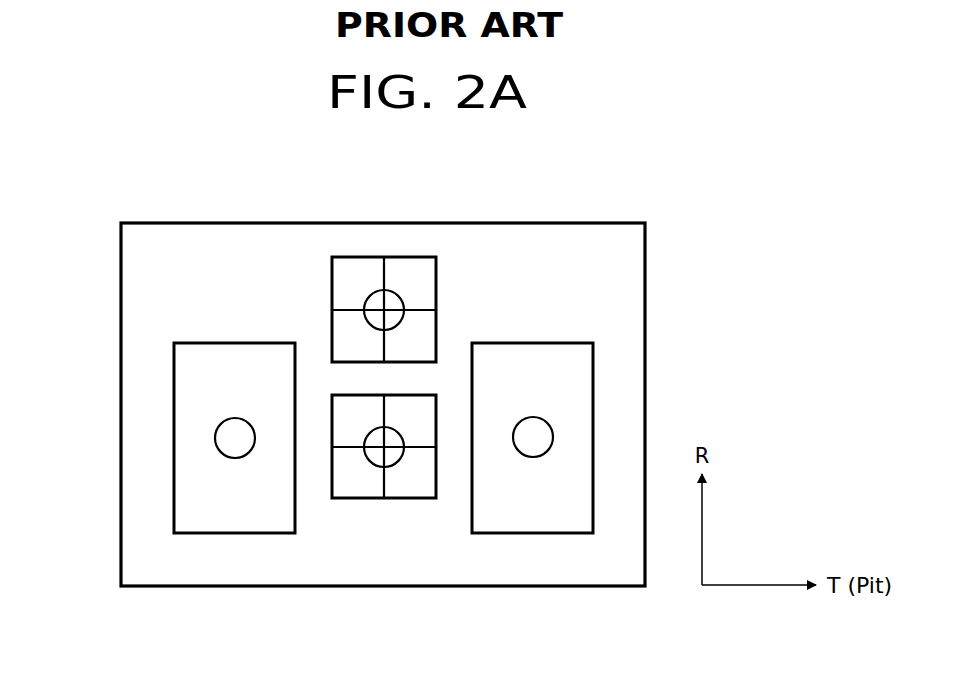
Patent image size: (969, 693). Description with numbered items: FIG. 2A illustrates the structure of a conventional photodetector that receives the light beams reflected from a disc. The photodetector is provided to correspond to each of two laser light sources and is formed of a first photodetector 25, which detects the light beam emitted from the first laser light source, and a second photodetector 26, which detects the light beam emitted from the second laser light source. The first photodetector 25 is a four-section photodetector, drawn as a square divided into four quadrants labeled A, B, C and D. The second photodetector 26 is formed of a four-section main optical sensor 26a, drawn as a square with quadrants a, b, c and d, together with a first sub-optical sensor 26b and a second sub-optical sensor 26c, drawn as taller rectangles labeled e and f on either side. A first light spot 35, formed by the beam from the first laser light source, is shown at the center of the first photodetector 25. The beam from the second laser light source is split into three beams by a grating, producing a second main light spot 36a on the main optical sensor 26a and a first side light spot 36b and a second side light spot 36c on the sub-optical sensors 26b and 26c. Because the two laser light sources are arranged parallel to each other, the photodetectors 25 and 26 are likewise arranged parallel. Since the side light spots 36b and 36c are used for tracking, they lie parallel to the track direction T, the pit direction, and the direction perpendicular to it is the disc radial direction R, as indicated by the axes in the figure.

The first photodetector 25 is at (423, 242).
The second photodetector 26 is at (542, 402).
The main optical sensor 26a is at (418, 493).
The first sub-optical sensor 26b is at (253, 525).
The second sub-optical sensor 26c is at (558, 522).
The first light spot 35 is at (378, 291).
The second main light spot 36a is at (379, 467).
The first side light spot 36b is at (215, 431).
The second side light spot 36c is at (553, 429).